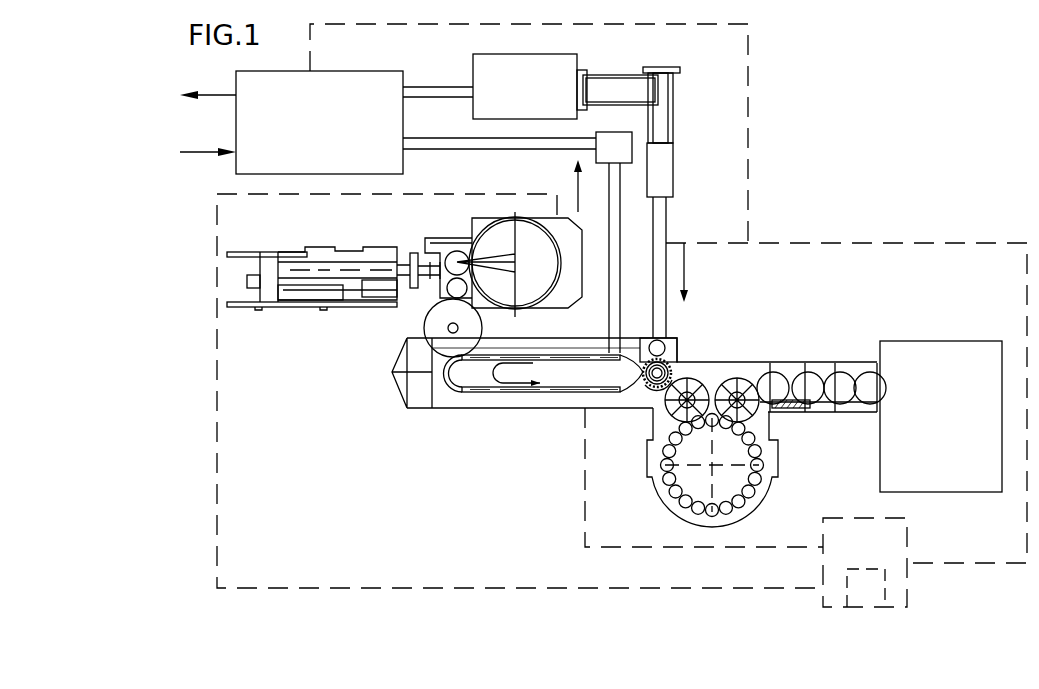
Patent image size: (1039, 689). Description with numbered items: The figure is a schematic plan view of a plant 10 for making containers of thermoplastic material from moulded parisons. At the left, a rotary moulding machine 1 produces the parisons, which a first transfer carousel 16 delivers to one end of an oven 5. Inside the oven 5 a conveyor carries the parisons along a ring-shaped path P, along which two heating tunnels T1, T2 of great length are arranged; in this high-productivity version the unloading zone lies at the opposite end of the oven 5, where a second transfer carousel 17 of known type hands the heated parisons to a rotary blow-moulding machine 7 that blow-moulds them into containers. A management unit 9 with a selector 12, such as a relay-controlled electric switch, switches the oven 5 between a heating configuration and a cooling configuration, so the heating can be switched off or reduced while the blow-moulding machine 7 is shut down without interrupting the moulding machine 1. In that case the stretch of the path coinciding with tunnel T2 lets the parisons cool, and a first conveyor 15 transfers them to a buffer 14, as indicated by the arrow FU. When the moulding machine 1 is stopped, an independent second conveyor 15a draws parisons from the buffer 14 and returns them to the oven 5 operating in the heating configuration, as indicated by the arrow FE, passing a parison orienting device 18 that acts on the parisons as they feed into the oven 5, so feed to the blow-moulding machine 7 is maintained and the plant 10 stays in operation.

The rotary moulding machine 1 is at (466, 223).
The oven 5 is at (450, 400).
The rotary blow-moulding machine 7 is at (784, 480).
The management unit 9 is at (912, 541).
The plant 10 is at (813, 149).
The selector 12 is at (876, 595).
The buffer 14 is at (329, 121).
The first conveyor 15 is at (452, 140).
The second conveyor 15a is at (692, 267).
The carousel 16 is at (424, 318).
The second transfer carousel 17 is at (698, 370).
The parison orienting device 18 is at (522, 91).
The arrow FE is at (662, 213).
The arrow FU is at (590, 186).
The path P is at (503, 382).
The heating tunnel T1 is at (591, 348).
The heating tunnel T2 is at (554, 400).